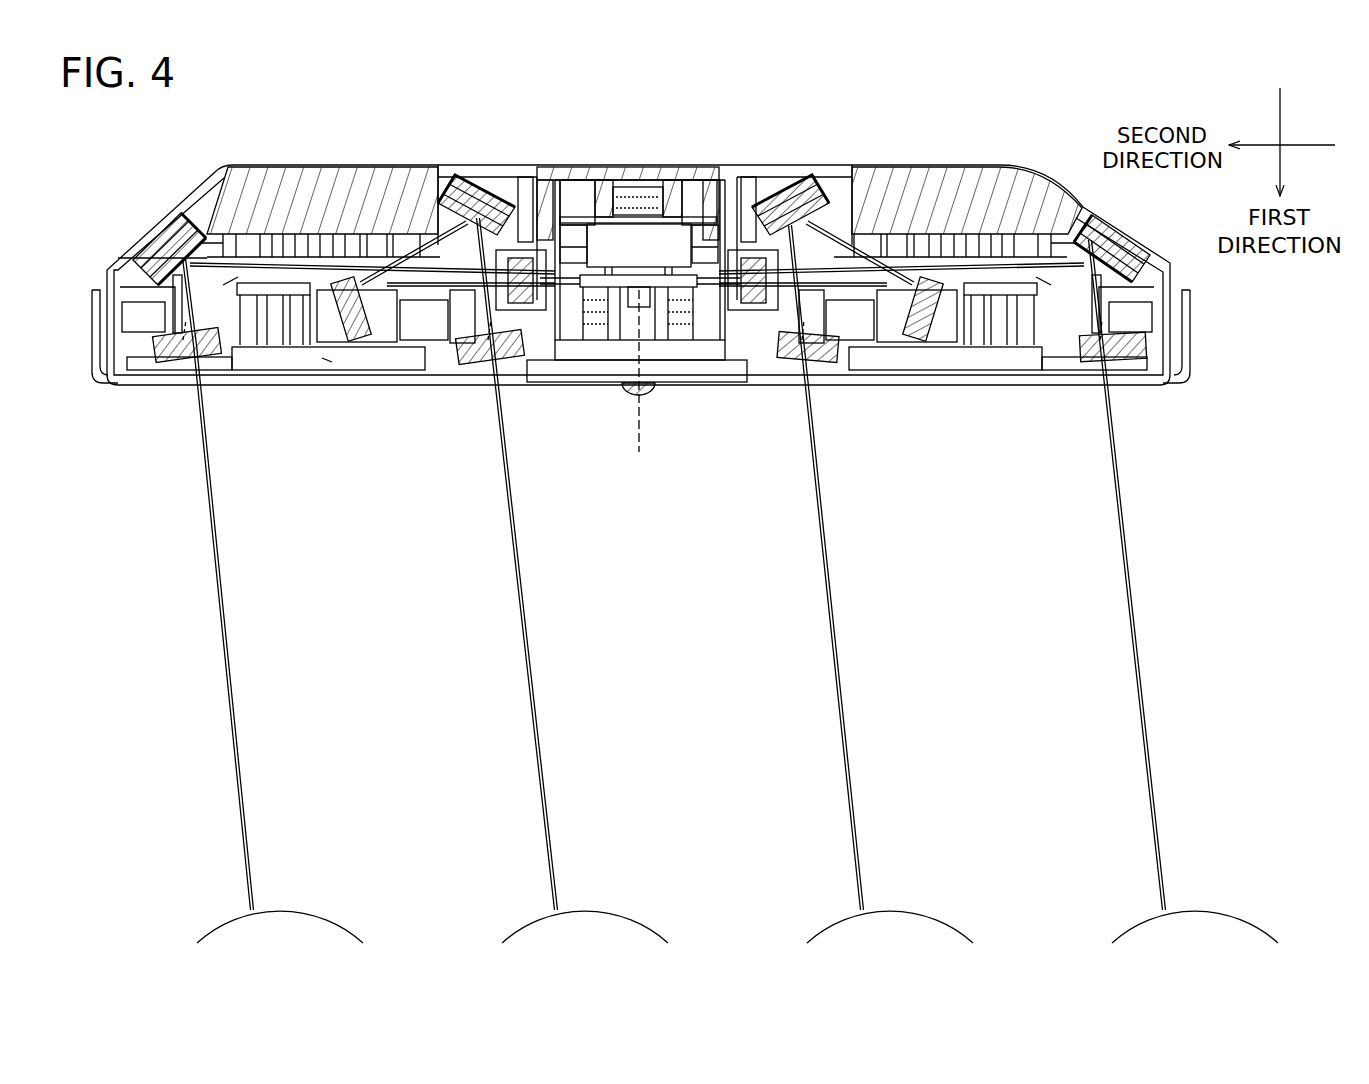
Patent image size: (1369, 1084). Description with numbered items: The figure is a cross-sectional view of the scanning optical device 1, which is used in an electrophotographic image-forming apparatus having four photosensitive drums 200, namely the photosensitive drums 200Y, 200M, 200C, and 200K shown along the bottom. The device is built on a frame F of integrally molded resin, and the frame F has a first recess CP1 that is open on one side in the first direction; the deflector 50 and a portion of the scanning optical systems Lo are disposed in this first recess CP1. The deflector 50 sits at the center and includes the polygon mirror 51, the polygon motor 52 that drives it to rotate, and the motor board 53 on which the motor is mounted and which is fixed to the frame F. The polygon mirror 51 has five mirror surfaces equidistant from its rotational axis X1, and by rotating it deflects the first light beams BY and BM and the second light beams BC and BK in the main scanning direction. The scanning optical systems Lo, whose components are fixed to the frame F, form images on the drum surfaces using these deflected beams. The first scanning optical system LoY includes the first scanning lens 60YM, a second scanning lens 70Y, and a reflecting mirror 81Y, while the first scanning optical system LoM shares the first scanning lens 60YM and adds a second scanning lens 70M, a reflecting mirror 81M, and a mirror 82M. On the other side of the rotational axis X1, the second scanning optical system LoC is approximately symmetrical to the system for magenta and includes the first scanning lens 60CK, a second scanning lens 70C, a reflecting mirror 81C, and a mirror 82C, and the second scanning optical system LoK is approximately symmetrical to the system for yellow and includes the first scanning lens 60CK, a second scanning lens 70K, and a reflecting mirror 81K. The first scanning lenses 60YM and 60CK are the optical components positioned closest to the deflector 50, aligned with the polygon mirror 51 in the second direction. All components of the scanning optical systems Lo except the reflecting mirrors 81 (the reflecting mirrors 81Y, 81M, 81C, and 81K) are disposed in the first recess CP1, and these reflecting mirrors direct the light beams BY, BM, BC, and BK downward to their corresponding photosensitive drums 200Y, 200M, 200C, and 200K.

The scanning optical device 1 is at (1028, 121).
The frame F is at (922, 160).
The deflector 50 is at (627, 324).
The polygon mirror 51 is at (686, 287).
The polygon motor 52 is at (641, 233).
The motor board 53 is at (652, 212).
The rotational axis X1 is at (640, 440).
The first scanning lens 60YM is at (523, 252).
The first scanning lens 60CK is at (753, 253).
The reflecting mirror 81 is at (165, 215).
The reflecting mirror 81Y is at (173, 228).
The reflecting mirror 81M is at (468, 196).
The reflecting mirror 81C is at (785, 192).
The reflecting mirror 81K is at (1108, 248).
The mirror 82M is at (352, 342).
The mirror 82C is at (930, 345).
The first recess CP1 is at (326, 364).
The second scanning lens 70Y is at (210, 365).
The second scanning lens 70M is at (506, 362).
The second scanning lens 70C is at (833, 362).
The second scanning lens 70K is at (1127, 360).
The scanning optical system Lo is at (157, 425).
The first scanning optical system LoY is at (178, 400).
The first scanning optical system LoM is at (483, 400).
The second scanning optical system LoC is at (786, 400).
The second scanning optical system LoK is at (1088, 400).
The first light beam BY is at (224, 598).
The first light beam BM is at (523, 598).
The second light beam BC is at (831, 598).
The second light beam BK is at (1131, 598).
The photosensitive drum 200 is at (312, 904).
The photosensitive drum 200Y is at (320, 912).
The photosensitive drum 200M is at (626, 912).
The photosensitive drum 200C is at (930, 912).
The photosensitive drum 200K is at (1232, 912).